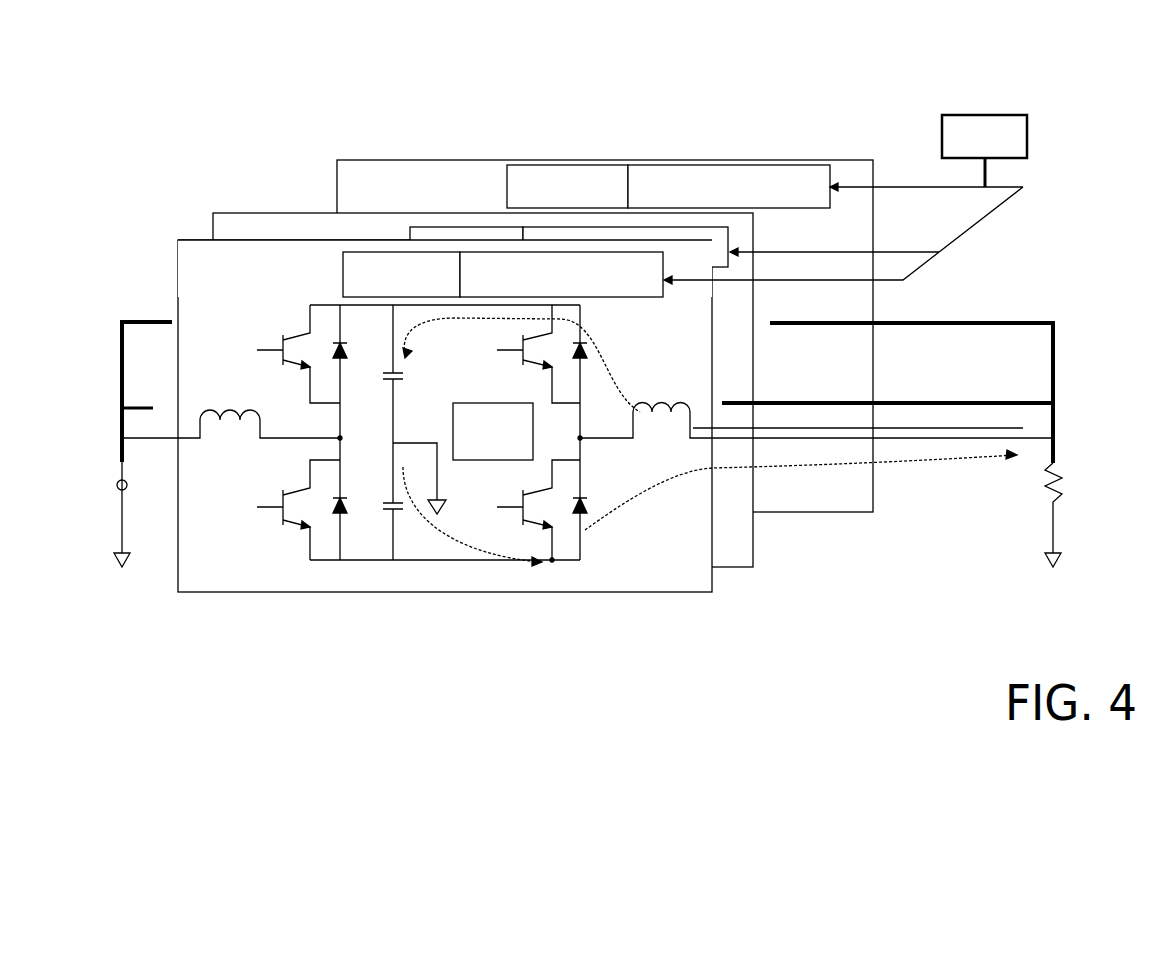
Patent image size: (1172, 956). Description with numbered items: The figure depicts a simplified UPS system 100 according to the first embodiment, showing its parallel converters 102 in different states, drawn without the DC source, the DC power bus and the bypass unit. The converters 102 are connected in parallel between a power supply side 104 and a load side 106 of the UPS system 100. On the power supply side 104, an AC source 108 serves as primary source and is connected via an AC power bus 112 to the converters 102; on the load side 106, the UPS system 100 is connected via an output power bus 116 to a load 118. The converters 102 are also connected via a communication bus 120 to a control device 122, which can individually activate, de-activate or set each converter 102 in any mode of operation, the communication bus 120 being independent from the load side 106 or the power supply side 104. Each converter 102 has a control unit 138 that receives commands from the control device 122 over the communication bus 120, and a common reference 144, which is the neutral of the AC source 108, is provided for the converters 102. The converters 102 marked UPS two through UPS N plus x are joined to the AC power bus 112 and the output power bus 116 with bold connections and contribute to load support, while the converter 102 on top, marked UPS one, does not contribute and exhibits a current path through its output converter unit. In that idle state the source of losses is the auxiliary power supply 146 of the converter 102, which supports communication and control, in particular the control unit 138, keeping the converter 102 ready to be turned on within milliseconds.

The UPS system 100 is at (112, 155).
The converter 102 is at (280, 265).
The power supply side 104 is at (208, 168).
The load side 106 is at (858, 135).
The AC source 108 is at (112, 495).
The AC power bus 112 is at (138, 322).
The output power bus 116 is at (918, 408).
The load 118 is at (1052, 503).
The communication bus 120 is at (895, 187).
The control device 122 is at (985, 115).
The control unit 138 is at (450, 277).
The common reference 144 is at (282, 440).
The auxiliary power supply 146 is at (510, 440).